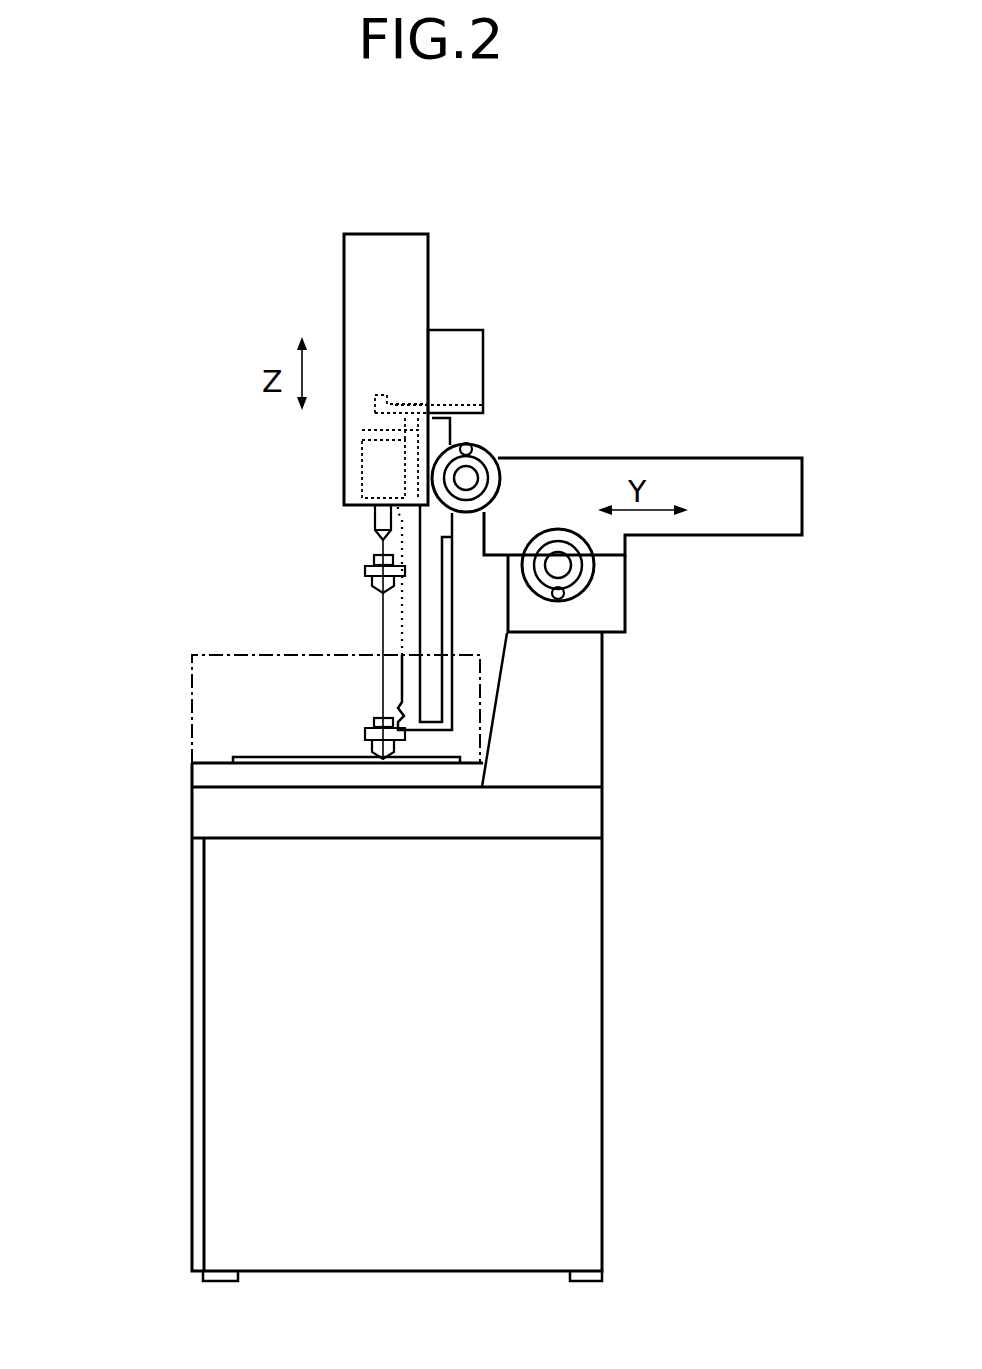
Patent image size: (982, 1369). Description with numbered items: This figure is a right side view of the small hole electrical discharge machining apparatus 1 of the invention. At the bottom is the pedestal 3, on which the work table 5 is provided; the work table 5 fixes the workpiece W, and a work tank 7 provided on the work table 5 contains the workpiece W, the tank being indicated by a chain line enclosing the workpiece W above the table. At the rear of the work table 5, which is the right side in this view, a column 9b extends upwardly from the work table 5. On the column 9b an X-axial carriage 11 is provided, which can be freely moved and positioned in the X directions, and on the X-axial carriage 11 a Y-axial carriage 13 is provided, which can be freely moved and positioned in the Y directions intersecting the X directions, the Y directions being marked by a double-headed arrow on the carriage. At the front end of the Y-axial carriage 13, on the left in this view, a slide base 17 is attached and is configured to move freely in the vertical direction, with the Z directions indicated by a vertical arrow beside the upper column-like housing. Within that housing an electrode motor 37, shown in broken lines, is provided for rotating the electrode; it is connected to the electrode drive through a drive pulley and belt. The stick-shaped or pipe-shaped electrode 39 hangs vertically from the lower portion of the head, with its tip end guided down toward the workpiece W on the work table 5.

The small hole electrical discharge machining apparatus 1 is at (652, 355).
The pedestal 3 is at (603, 1007).
The work table 5 is at (192, 816).
The work tank 7 is at (192, 712).
The column 9b is at (603, 717).
The X-axial carriage 11 is at (612, 591).
The Y-axial carriage 13 is at (742, 458).
The slide base 17 is at (452, 432).
The electrode motor 37 is at (428, 392).
The electrode 39 is at (380, 620).
The workpiece W is at (330, 757).